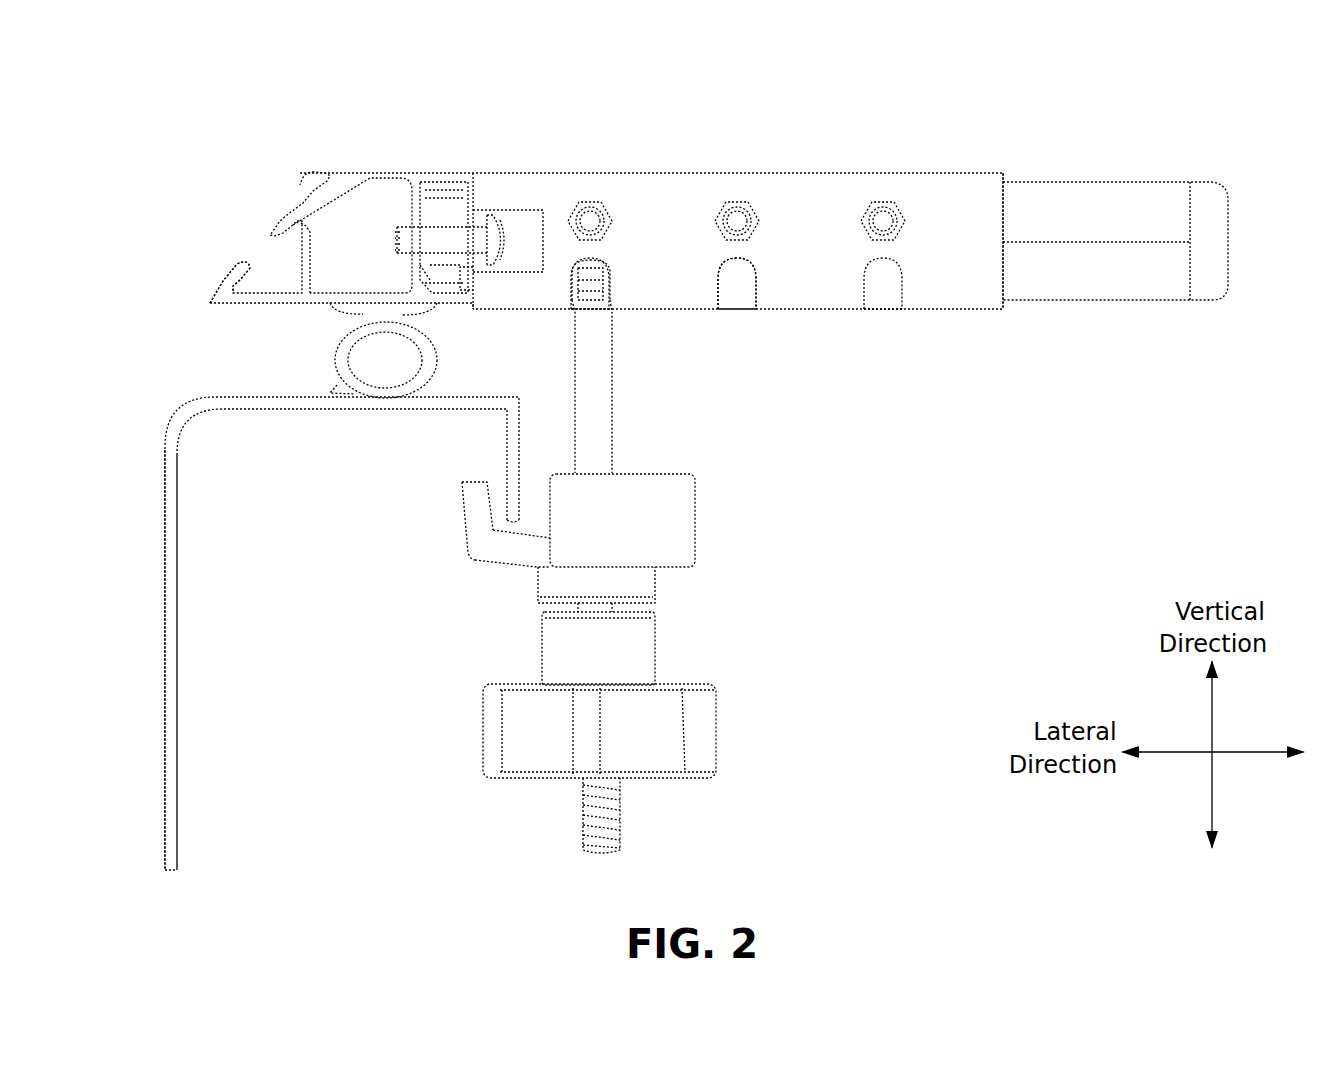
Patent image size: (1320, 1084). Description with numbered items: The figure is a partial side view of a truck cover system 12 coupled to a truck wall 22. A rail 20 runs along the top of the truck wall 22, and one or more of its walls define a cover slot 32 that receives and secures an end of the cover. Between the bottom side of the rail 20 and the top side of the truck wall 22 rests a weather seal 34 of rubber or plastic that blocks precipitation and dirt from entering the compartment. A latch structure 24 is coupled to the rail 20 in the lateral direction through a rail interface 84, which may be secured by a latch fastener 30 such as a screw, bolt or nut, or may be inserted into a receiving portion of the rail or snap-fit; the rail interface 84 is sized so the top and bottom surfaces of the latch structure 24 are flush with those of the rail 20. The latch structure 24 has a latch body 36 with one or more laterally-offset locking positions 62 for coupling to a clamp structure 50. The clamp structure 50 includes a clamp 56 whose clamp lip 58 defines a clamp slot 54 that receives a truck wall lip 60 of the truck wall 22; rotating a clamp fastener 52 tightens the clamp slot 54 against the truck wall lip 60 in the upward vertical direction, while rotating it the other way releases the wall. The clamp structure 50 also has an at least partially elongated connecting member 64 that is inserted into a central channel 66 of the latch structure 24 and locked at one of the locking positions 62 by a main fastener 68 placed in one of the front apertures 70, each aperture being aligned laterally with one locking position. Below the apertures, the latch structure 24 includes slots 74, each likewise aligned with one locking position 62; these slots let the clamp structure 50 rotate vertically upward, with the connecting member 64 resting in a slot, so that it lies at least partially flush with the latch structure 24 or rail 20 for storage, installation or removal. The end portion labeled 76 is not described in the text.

The truck cover system 12 is at (336, 824).
The rail 20 is at (350, 170).
The truck wall 22 is at (172, 705).
The latch structure 24 is at (859, 168).
The latch fastener 30 is at (475, 235).
The cover slot 32 is at (262, 250).
The weather seal 34 is at (334, 356).
The latch body 36 is at (975, 185).
The clamp structure 50 is at (657, 628).
The clamp fastener 52 is at (483, 723).
The clamp slot 54 is at (517, 522).
The clamp 56 is at (695, 513).
The clamp lip 58 is at (482, 518).
The truck wall lip 60 is at (518, 448).
The laterally-offset locking positions 62 is at (618, 318).
The connecting member 64 is at (600, 430).
The central channel 66 is at (742, 285).
The main fastener 68 is at (590, 220).
The front apertures 70 is at (883, 220).
The slots 74 is at (877, 282).
The end cap 76 is at (1077, 193).
The rail interface 84 is at (503, 190).